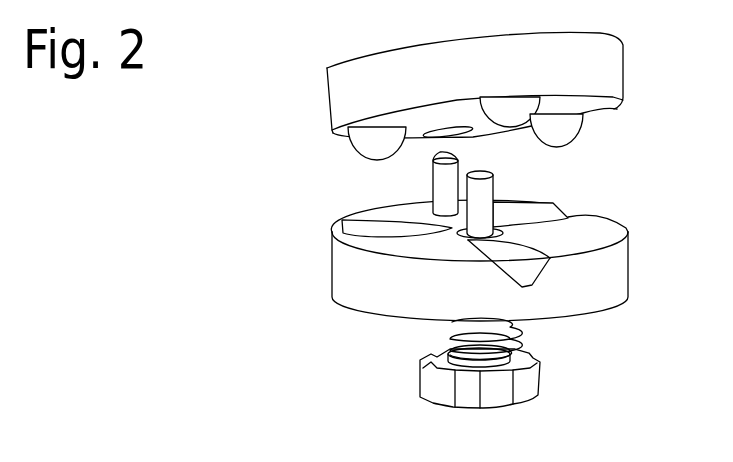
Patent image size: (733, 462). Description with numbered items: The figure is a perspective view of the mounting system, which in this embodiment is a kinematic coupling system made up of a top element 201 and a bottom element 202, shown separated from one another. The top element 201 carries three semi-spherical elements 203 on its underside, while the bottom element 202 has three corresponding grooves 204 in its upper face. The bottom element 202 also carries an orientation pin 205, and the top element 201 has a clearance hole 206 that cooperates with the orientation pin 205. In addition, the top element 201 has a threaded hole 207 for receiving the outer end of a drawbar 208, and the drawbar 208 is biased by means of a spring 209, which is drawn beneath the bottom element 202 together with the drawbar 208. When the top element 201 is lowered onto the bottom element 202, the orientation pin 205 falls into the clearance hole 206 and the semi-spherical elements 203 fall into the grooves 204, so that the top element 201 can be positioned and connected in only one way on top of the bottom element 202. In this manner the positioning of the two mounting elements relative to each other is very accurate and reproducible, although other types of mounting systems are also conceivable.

The top element 201 is at (352, 83).
The bottom element 202 is at (373, 290).
The semi-spherical elements 203 is at (357, 137).
The grooves 204 is at (540, 273).
The orientation pin 205 is at (443, 178).
The clearance hole 206 is at (467, 137).
The threaded hole 207 is at (473, 115).
The drawbar 208 is at (502, 392).
The spring 209 is at (453, 333).